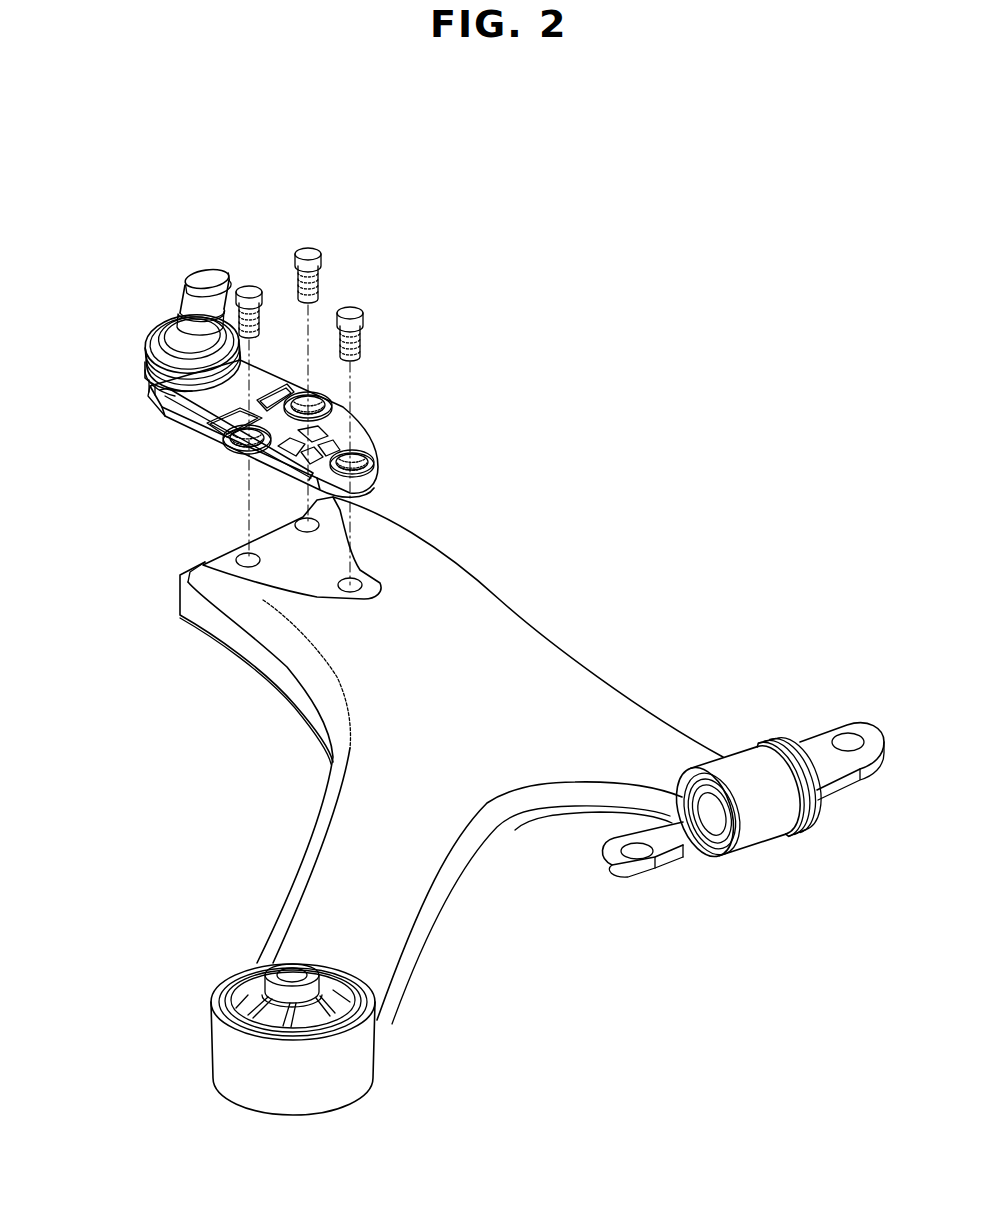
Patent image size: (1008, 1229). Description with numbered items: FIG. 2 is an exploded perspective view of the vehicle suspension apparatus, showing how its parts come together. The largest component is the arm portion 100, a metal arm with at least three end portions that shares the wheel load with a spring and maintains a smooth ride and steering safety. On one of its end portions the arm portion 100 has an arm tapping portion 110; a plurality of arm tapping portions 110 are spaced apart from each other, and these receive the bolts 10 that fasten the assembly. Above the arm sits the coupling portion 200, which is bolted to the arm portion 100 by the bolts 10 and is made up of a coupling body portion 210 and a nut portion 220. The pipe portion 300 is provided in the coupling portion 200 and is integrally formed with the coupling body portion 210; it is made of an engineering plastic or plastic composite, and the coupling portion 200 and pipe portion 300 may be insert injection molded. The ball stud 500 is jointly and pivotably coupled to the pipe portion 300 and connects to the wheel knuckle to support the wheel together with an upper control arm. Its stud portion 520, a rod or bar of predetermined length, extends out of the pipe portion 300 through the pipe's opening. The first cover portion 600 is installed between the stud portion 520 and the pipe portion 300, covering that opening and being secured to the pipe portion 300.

The arm portion 100 is at (494, 622).
The arm tapping portion 110 is at (240, 556).
The bolt 10 is at (248, 286).
The coupling portion 200 is at (97, 437).
The coupling body portion 210 is at (213, 422).
The nut portion 220 is at (215, 452).
The pipe portion 300 is at (143, 362).
The ball stud 500 is at (143, 170).
The stud portion 520 is at (188, 268).
The first cover portion 600 is at (160, 328).